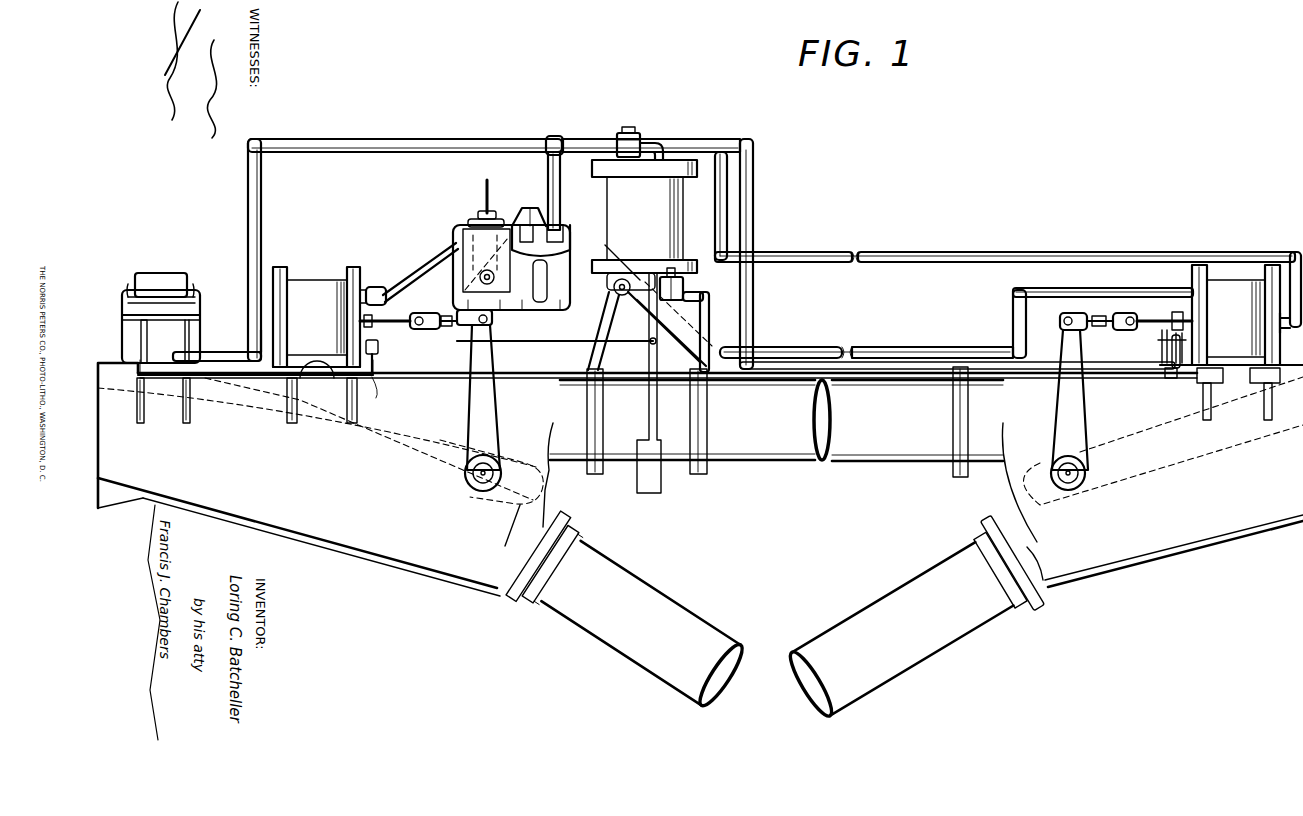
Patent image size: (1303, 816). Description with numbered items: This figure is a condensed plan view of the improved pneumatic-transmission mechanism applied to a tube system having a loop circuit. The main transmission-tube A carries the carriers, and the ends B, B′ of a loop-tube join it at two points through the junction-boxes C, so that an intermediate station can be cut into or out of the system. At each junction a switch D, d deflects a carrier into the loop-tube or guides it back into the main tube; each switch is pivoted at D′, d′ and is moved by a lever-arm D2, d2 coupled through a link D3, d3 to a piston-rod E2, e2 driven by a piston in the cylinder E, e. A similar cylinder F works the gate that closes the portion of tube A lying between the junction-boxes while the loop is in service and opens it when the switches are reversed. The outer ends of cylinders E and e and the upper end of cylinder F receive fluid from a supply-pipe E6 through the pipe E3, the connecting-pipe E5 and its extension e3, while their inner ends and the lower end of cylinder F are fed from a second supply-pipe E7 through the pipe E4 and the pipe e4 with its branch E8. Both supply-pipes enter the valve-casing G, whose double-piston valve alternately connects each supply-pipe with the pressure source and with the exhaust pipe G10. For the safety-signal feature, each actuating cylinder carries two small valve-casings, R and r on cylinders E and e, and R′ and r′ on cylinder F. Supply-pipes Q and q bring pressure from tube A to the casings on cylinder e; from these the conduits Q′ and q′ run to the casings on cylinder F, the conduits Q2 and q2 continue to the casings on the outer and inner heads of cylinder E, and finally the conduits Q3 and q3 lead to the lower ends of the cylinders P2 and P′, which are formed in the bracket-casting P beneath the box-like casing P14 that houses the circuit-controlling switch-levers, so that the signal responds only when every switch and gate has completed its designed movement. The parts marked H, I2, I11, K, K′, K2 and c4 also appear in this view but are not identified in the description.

The main transmission-tube A is at (776, 383).
The loop-tube end B is at (588, 628).
The loop-tube end B′ is at (920, 614).
The junction-box C is at (333, 458).
The switch D is at (397, 455).
The switch pivot D′ is at (480, 490).
The lever-arm D2 is at (478, 390).
The link D3 is at (450, 312).
The cylinder E is at (316, 345).
The piston-rod E2 is at (420, 322).
The pipe E3 is at (600, 138).
The pipe E4 is at (412, 280).
The connecting-pipe E5 is at (665, 140).
The supply-pipe E6 is at (560, 198).
The supply-pipe E7 is at (530, 208).
The branch pipe E8 is at (612, 288).
The cylinder F is at (644, 225).
The valve-casing G is at (541, 240).
The exhaust pipe G10 is at (550, 282).
The valve block H is at (455, 238).
The slide I2 is at (486, 260).
The pin I11 is at (498, 278).
The valve stem K is at (484, 182).
The cap K′ is at (493, 202).
The base flange K2 is at (468, 222).
The bracket-casting P is at (161, 356).
The cylinder P′ is at (132, 290).
The cylinder P2 is at (192, 290).
The box-like casing P14 is at (161, 285).
The supply-pipe Q is at (1290, 330).
The conduit Q′ is at (728, 140).
The conduit Q2 is at (285, 150).
The conduit Q3 is at (228, 354).
The valve-casing R is at (246, 380).
The valve-casing R′ is at (640, 133).
The link c4 is at (600, 250).
The switch d is at (1190, 448).
The switch pivot d′ is at (1088, 478).
The lever-arm d2 is at (1070, 400).
The link d3 is at (1098, 311).
The cylinder e is at (1231, 342).
The piston-rod e2 is at (1164, 311).
The extension pipe e3 is at (1005, 207).
The pipe e4 is at (1103, 280).
The supply-pipe q is at (1170, 380).
The conduit q′ is at (722, 310).
The conduit q2 is at (444, 345).
The conduit q3 is at (122, 344).
The valve-casing r is at (1158, 338).
The valve-casing r′ is at (684, 292).